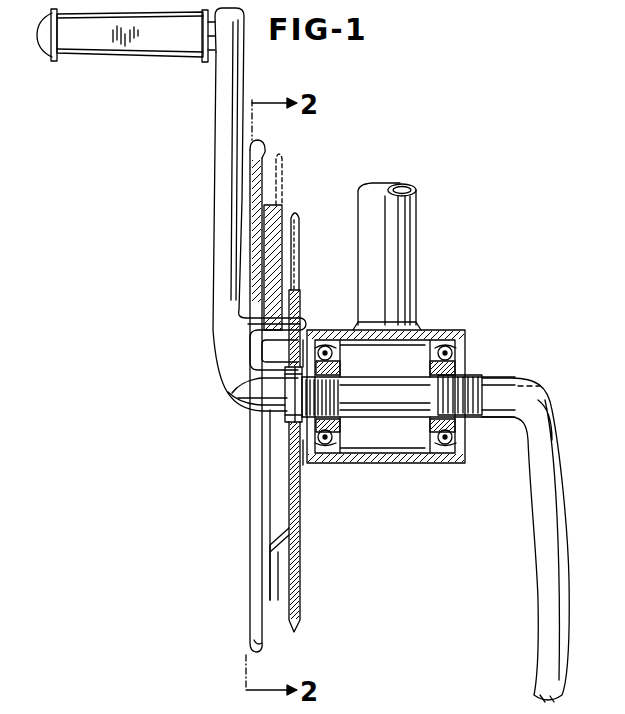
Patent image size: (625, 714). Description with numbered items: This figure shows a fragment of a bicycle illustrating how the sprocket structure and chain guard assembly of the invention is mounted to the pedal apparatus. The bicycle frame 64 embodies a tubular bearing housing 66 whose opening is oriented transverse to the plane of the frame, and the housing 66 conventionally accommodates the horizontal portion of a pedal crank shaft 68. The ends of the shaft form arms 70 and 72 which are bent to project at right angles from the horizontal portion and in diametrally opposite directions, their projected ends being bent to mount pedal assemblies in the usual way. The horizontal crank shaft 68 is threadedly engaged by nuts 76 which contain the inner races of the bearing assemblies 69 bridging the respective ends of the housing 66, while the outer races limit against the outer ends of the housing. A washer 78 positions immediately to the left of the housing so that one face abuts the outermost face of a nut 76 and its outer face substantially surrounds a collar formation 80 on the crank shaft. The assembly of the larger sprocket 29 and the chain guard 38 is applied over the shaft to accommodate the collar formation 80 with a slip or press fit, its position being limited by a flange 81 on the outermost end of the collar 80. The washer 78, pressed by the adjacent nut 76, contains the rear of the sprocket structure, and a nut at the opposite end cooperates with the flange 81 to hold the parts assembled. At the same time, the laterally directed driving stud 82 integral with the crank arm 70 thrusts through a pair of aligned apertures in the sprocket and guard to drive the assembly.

The second and larger sprocket 29 is at (303, 545).
The chain guard 38 is at (258, 508).
The bicycle frame 64 is at (420, 250).
The tubular bearing housing 66 is at (426, 333).
The pedal crank shaft 68 is at (386, 402).
The bearing assemblies 69 is at (443, 452).
The crank arm 70 is at (213, 232).
The crank arm 72 is at (540, 574).
The nuts 76 is at (470, 442).
The washer 78 is at (310, 460).
The collar formation 80 is at (283, 420).
The flange 81 is at (244, 396).
The driving stud 82 is at (305, 325).